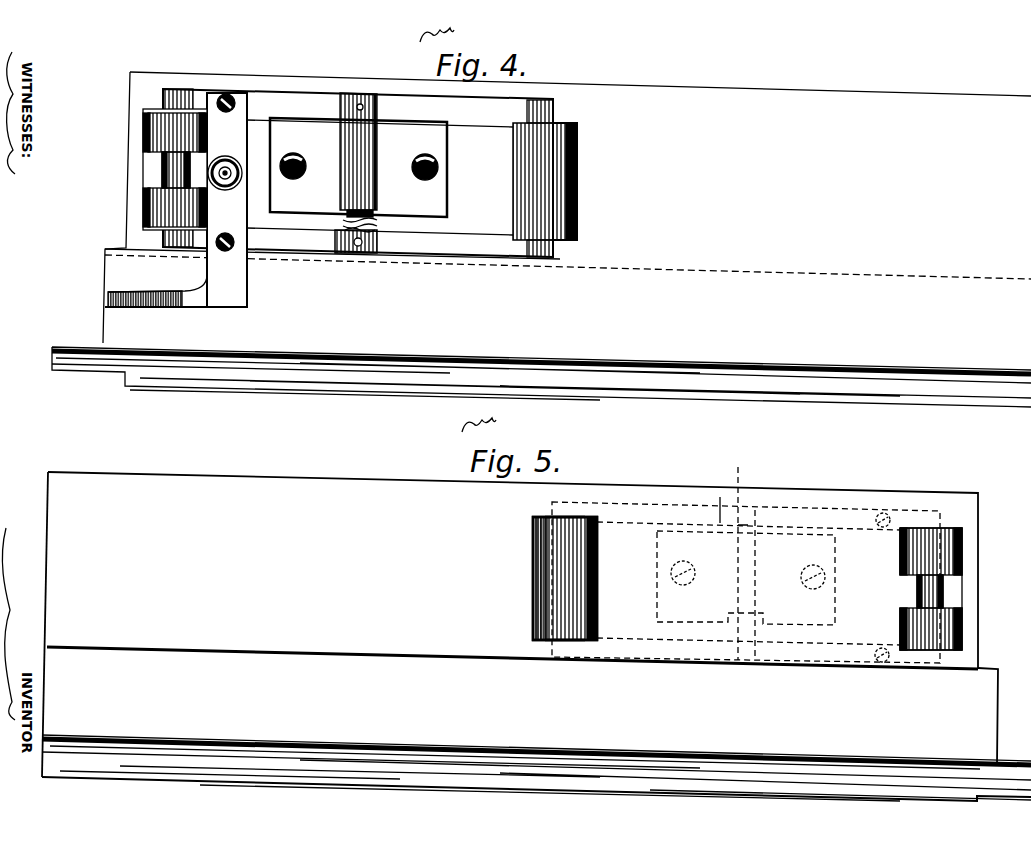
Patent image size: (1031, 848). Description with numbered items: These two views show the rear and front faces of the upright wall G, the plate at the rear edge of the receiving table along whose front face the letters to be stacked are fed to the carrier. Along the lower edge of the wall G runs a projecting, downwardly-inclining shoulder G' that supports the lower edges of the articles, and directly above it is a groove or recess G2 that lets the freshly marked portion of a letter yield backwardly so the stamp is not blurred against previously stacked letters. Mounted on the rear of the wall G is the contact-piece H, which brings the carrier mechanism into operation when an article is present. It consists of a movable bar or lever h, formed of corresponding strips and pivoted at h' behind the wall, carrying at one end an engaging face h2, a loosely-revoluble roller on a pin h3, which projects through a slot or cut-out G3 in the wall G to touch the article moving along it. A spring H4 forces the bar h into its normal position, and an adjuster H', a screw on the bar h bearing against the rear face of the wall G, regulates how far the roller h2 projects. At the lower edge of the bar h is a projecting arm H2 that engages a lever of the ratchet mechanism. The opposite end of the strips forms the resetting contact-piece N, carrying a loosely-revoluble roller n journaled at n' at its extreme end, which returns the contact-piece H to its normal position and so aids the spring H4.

In FIG. 4, the upright wall G is at (567, 207).
In FIG. 5, the upright wall G is at (510, 624).
In FIG. 4, the downwardly-inclining shoulder G' is at (541, 385).
In FIG. 5, the downwardly-inclining shoulder G' is at (536, 757).
In FIG. 5, the groove or recess G2 is at (424, 668).
In FIG. 4, the slot or cut-out G3 is at (143, 173).
In FIG. 5, the slot or cut-out G3 is at (928, 623).
In FIG. 4, the contact-piece H is at (148, 132).
In FIG. 5, the contact-piece H is at (911, 552).
In FIG. 4, the adjuster H' is at (242, 173).
In FIG. 4, the projecting arm H2 is at (173, 312).
In FIG. 4, the spring H4 is at (342, 208).
In FIG. 4, the bar or lever h is at (358, 177).
In FIG. 5, the bar or lever h is at (746, 573).
In FIG. 4, the pivot h' is at (368, 171).
In FIG. 5, the pivot h' is at (748, 559).
In FIG. 4, the engaging face h2 is at (205, 137).
In FIG. 5, the engaging face h2 is at (933, 555).
In FIG. 4, the pin h3 is at (157, 167).
In FIG. 5, the pin h3 is at (933, 595).
In FIG. 4, the resetting contact-piece N is at (573, 142).
In FIG. 5, the resetting contact-piece N is at (543, 575).
In FIG. 4, the roller n is at (556, 181).
In FIG. 5, the roller n is at (551, 578).
In FIG. 4, the journal n' is at (555, 177).
In FIG. 5, the journal n' is at (565, 578).